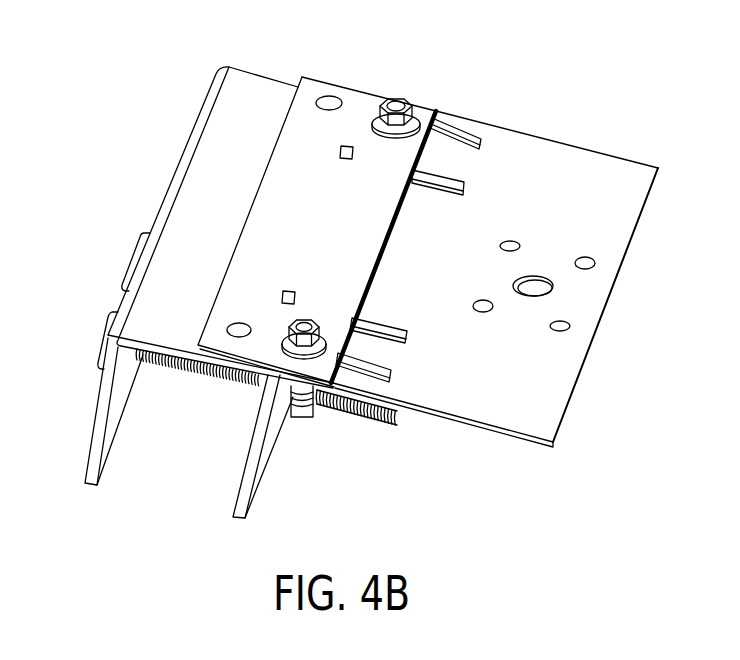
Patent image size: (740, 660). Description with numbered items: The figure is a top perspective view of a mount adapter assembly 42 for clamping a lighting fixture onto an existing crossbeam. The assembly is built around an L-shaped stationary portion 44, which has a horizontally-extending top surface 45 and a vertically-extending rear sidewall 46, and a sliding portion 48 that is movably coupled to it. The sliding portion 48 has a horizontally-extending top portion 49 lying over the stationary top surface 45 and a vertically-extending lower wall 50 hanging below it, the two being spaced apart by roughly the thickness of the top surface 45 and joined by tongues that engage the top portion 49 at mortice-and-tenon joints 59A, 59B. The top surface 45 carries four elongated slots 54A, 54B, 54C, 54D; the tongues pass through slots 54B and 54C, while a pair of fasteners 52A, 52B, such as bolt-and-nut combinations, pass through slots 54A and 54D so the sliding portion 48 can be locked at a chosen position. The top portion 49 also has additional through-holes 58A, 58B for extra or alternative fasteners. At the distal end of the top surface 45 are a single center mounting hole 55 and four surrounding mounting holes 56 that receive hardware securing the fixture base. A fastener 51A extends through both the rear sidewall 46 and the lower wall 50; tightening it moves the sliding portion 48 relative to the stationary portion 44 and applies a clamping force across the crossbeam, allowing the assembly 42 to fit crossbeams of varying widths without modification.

The mount adapter assembly 42 is at (613, 92).
The L-shaped stationary portion 44 is at (197, 113).
The horizontally-extending top surface 45 is at (623, 180).
The vertically-extending rear sidewall 46 is at (98, 423).
The sliding portion 48 is at (434, 94).
The horizontally-extending top portion 49 is at (283, 202).
The vertically-extending lower wall 50 is at (262, 458).
The fastener 51A is at (204, 390).
The fastener 52A is at (323, 320).
The fastener 52B is at (398, 84).
The elongated slot 54A is at (395, 372).
The elongated slot 54B is at (390, 322).
The elongated slot 54C is at (440, 195).
The elongated slot 54D is at (472, 140).
The center mounting hole 55 is at (552, 292).
The mounting holes 56 is at (510, 238).
The through-hole 58A is at (238, 322).
The through-hole 58B is at (323, 95).
The mortice-and-tenon joint 59A is at (289, 291).
The mortice-and-tenon joint 59B is at (345, 160).